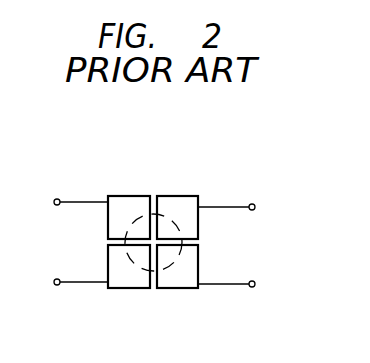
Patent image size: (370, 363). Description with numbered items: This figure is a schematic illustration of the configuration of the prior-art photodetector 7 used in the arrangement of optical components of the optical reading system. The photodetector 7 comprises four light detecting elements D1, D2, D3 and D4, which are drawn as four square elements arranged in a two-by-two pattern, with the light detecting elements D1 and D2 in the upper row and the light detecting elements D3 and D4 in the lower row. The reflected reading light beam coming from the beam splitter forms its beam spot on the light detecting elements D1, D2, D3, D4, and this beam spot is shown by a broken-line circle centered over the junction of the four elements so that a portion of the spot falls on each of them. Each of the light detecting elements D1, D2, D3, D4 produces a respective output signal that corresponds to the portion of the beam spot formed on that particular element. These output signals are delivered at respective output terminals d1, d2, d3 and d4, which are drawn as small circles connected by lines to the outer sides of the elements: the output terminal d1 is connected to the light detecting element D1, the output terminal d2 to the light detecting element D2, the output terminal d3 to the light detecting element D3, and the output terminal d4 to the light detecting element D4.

The photodetector 7 is at (162, 185).
The light detecting element D1 is at (108, 222).
The light detecting element D2 is at (198, 222).
The light detecting element D3 is at (108, 258).
The light detecting element D4 is at (198, 258).
The output terminal d1 is at (69, 204).
The output terminal d2 is at (237, 209).
The output terminal d3 is at (69, 281).
The output terminal d4 is at (237, 281).